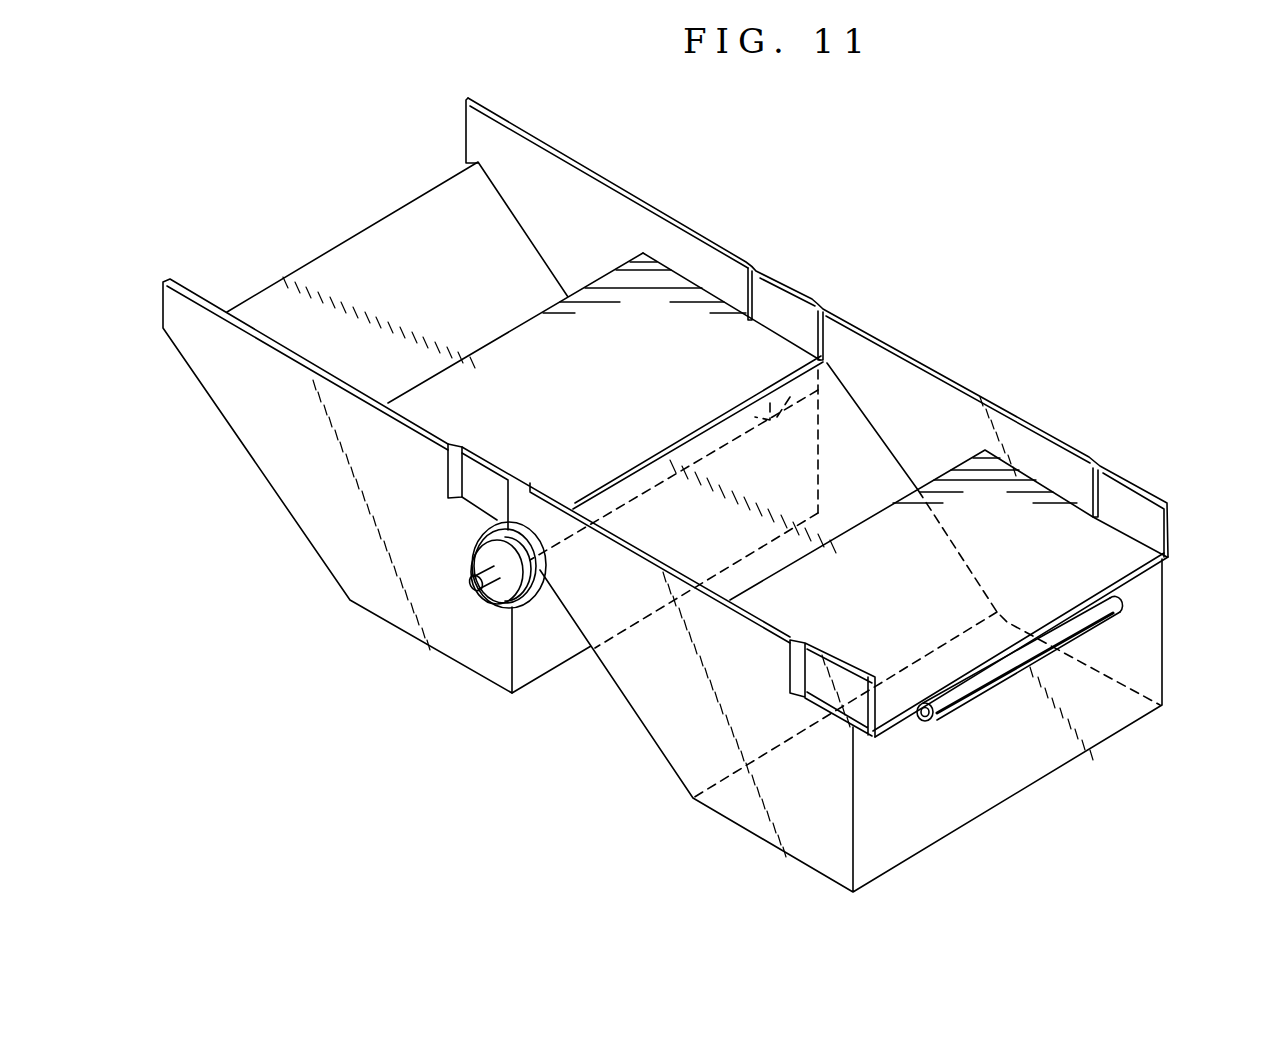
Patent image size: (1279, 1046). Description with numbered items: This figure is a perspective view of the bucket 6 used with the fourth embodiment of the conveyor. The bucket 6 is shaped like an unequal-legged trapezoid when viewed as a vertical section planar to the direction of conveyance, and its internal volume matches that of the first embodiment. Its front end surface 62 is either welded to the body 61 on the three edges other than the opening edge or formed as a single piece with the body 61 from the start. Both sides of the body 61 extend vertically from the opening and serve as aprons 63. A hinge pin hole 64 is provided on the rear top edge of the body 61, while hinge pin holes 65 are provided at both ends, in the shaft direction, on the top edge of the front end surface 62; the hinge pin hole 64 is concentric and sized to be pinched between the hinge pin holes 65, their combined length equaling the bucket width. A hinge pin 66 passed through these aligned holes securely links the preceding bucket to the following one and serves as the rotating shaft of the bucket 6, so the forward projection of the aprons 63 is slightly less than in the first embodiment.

The bucket 6 is at (1028, 307).
The body 61 is at (1027, 507).
The front end surface 62 is at (352, 260).
The aprons 63 is at (602, 198).
The hinge pin hole 64 is at (1103, 623).
The hinge pin holes 65 is at (790, 397).
The hinge pin 66 is at (473, 590).